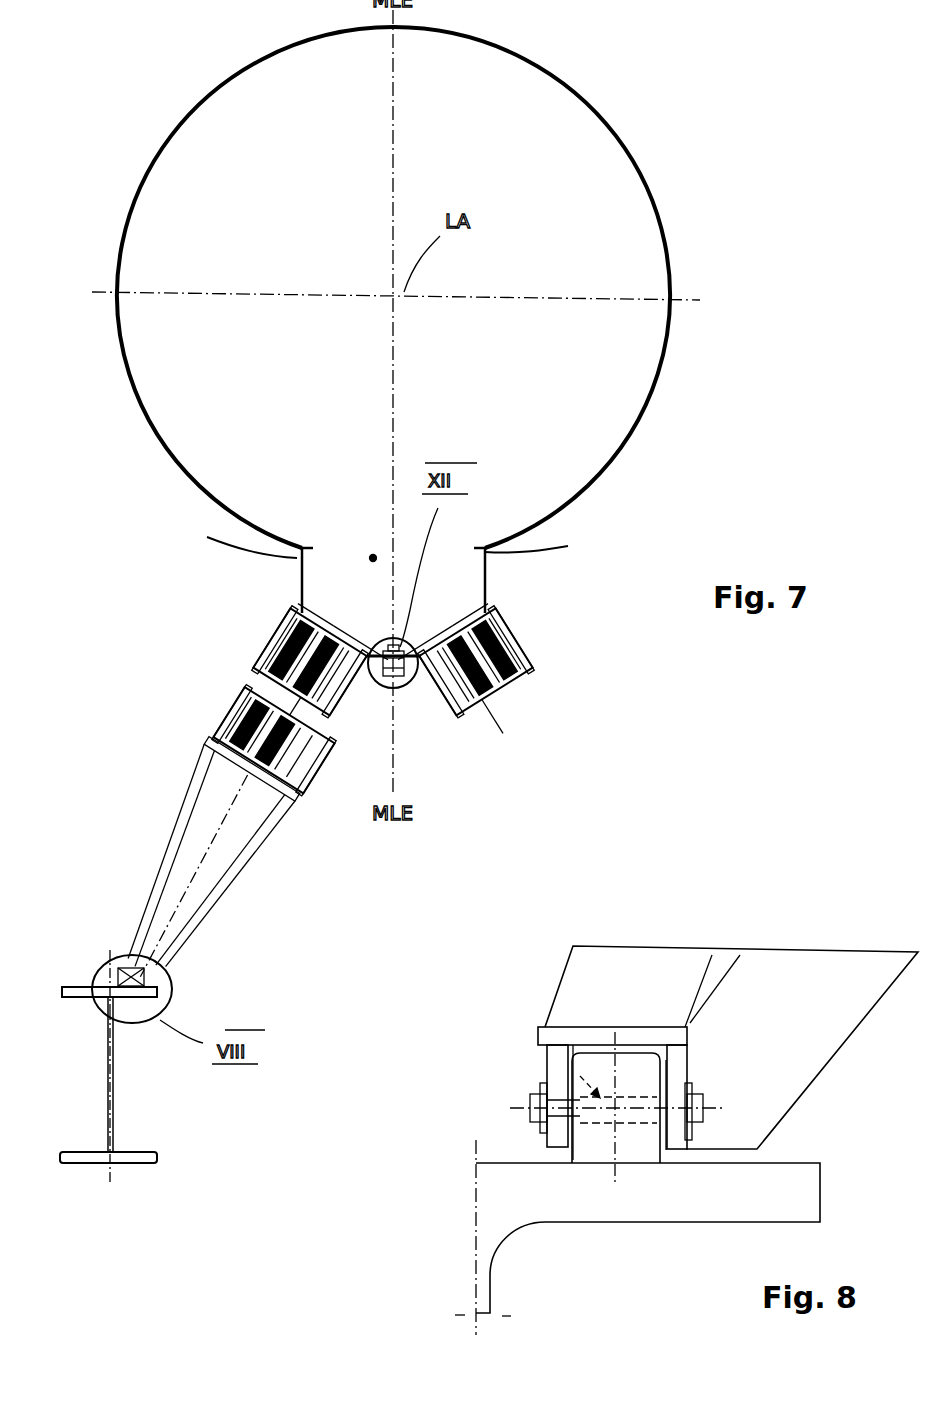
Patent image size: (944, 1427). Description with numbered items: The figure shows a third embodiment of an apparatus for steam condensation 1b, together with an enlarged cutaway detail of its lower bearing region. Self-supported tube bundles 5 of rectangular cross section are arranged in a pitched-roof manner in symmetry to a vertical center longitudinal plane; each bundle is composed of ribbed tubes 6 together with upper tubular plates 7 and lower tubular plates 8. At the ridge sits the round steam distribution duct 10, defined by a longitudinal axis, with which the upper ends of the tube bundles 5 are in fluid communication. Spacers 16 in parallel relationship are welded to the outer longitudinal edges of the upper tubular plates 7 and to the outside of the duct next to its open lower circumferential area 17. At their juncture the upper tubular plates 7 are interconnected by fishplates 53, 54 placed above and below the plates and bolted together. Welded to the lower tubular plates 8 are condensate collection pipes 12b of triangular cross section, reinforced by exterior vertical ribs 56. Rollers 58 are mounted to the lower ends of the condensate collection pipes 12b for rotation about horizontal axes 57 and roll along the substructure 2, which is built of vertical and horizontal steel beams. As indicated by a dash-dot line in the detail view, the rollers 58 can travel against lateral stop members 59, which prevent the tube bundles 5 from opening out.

In FIG. 7, the steam distribution duct 10 is at (633, 156).
In FIG. 7, the apparatus for steam condensation 1b is at (740, 316).
In FIG. 7, the spacers 16 is at (392, 562).
In FIG. 7, the open lower circumferential area 17 is at (373, 556).
In FIG. 7, the upper tubular plates 7 is at (346, 636).
In FIG. 7, the ribbed tubes 6 is at (293, 620).
In FIG. 7, the tube bundles 5 is at (262, 657).
In FIG. 7, the lower tubular plates 8 is at (248, 705).
In FIG. 7, the fishplate 53 is at (505, 683).
In FIG. 7, the fishplate 54 is at (383, 690).
In FIG. 7, the exterior vertical ribs 56 is at (198, 780).
In FIG. 8, the exterior vertical ribs 56 is at (613, 975).
In FIG. 7, the condensate collection pipes 12b is at (224, 848).
In FIG. 8, the condensate collection pipes 12b is at (733, 942).
In FIG. 7, the rollers 58 is at (167, 972).
In FIG. 8, the rollers 58 is at (633, 1150).
In FIG. 7, the substructure 2 is at (152, 1178).
In FIG. 8, the substructure 2 is at (497, 1205).
In FIG. 8, the horizontal axes 57 is at (548, 1063).
In FIG. 8, the lateral stop members 59 is at (514, 1152).